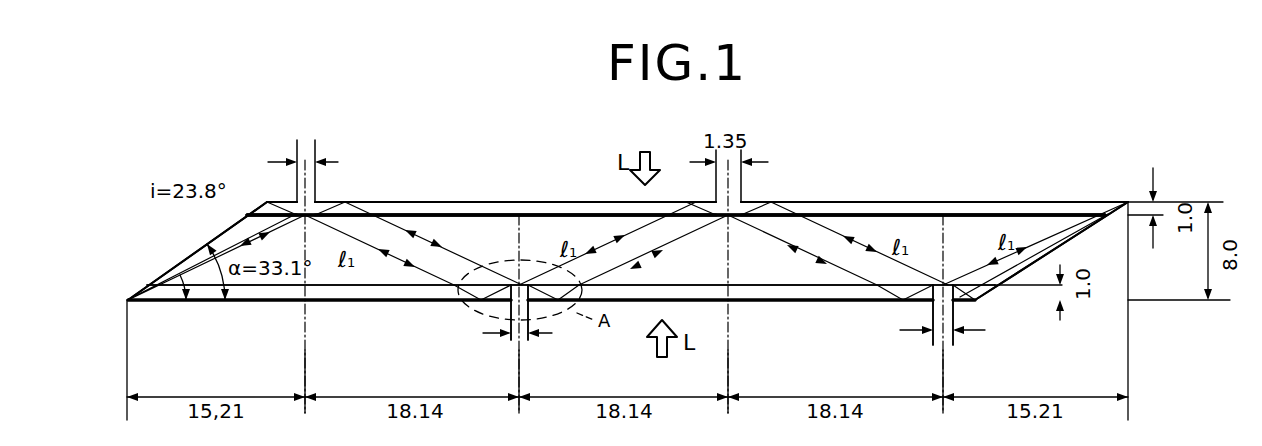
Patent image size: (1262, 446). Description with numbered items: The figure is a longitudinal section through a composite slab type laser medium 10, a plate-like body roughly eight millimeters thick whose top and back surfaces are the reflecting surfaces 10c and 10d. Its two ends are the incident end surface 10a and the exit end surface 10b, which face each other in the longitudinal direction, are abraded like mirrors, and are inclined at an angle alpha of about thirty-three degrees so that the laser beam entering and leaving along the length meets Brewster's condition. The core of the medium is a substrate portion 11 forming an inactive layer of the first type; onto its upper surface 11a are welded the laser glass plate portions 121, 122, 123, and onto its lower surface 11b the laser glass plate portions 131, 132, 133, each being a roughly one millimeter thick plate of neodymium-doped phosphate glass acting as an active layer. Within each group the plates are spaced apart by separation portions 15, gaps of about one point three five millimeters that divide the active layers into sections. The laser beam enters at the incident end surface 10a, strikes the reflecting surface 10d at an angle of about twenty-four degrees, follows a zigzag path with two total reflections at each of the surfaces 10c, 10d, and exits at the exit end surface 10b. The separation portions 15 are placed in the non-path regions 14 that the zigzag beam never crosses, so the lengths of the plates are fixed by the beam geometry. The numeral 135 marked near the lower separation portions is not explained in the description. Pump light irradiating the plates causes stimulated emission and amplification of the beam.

The laser medium 10 is at (1101, 163).
The incident end surface 10a is at (174, 262).
The exit end surface 10b is at (1058, 246).
The reflecting surface 10c is at (487, 205).
The reflecting surface 10d is at (417, 302).
The substrate portion 11 is at (979, 225).
The surface of the substrate portion 11a is at (430, 199).
The surface of the substrate portion 11b is at (381, 291).
The non-path region portion 14 is at (320, 210).
The separation portion 15 is at (305, 203).
The laser glass plate portion 121 is at (565, 202).
The laser glass plate portion 122 is at (917, 202).
The laser glass plate portion 123 is at (265, 202).
The laser glass plate portion 131 is at (740, 302).
The laser glass plate portion 132 is at (330, 302).
The laser glass plate portion 133 is at (1017, 302).
The slit region of lower reflective film 135 is at (737, 334).